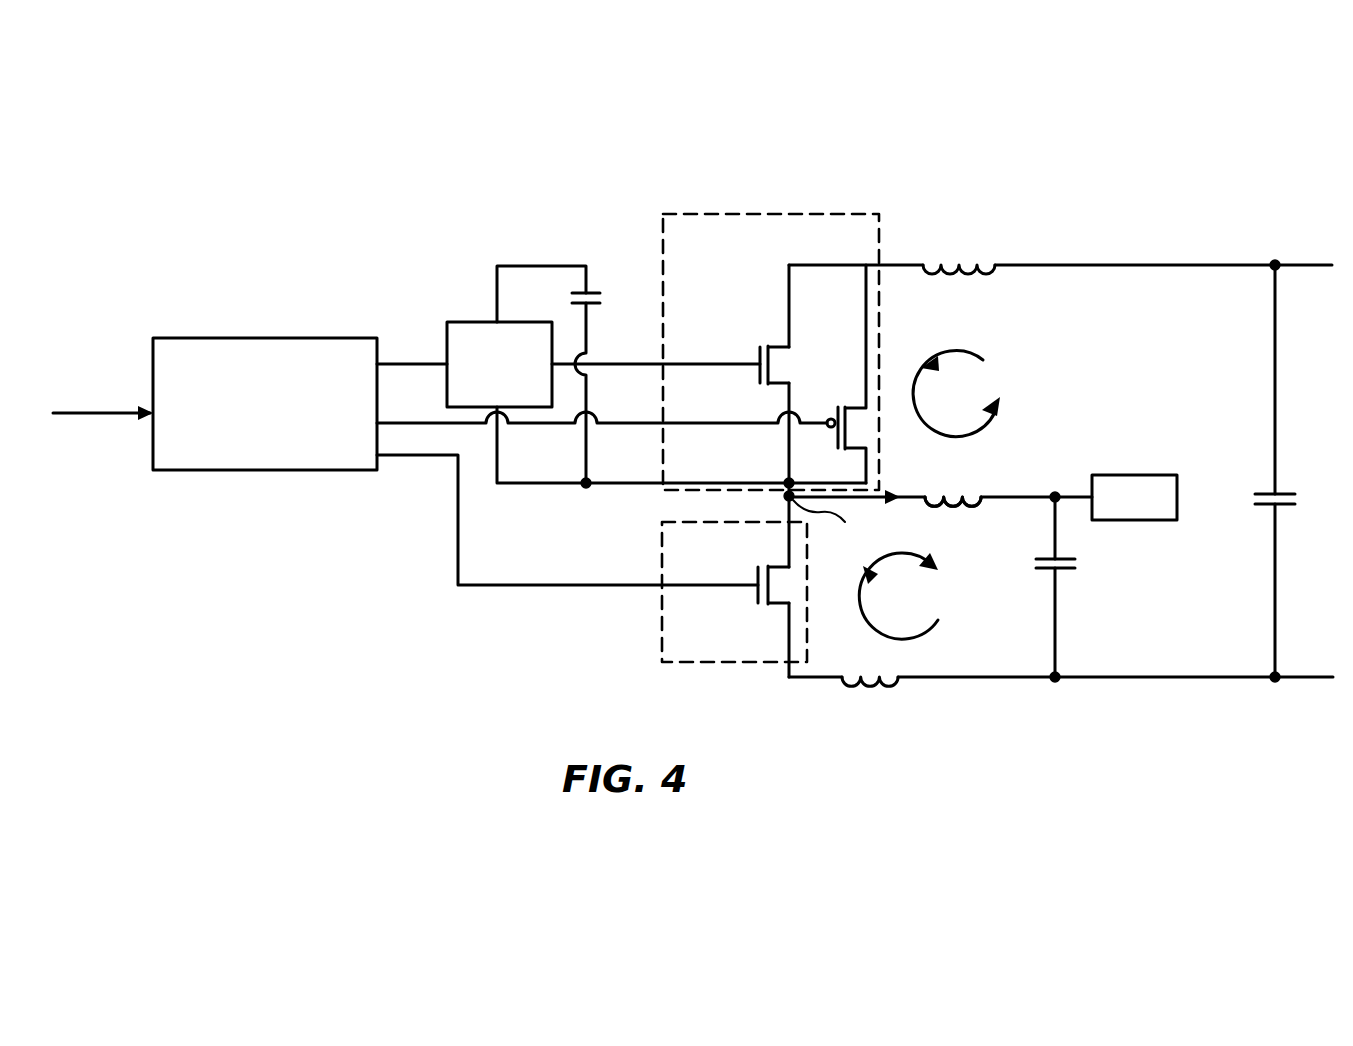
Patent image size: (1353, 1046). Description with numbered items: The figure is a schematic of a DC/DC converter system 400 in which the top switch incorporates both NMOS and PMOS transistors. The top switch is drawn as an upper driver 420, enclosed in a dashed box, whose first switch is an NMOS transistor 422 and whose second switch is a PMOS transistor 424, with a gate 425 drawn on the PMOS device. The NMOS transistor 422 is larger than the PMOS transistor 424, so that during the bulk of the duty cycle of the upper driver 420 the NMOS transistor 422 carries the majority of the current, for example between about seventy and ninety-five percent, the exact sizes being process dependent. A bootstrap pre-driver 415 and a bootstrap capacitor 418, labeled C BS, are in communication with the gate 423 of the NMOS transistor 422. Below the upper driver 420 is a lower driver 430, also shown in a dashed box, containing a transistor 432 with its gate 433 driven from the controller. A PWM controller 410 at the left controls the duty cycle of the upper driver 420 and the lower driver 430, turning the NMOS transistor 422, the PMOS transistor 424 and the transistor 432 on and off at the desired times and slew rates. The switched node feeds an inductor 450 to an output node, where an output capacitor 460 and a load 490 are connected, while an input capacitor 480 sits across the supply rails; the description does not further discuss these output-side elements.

The DC/DC converter system 400 is at (272, 200).
The PWM controller 410 is at (179, 338).
The bootstrap pre-driver 415 is at (479, 322).
The bootstrap capacitor 418 is at (591, 306).
The upper driver 420 is at (679, 214).
The NMOS transistor 422 is at (776, 346).
The gate 423 is at (768, 384).
The PMOS transistor 424 is at (863, 449).
The gate terminal of PMOS transistor 425 is at (834, 420).
The lower driver 430 is at (678, 662).
The transistor 432 is at (766, 606).
The gate terminal of low-side transistor 433 is at (760, 569).
The output inductor 450 is at (934, 502).
The output capacitor 460 is at (1066, 570).
The input capacitor 480 is at (1278, 494).
The load 490 is at (1125, 475).